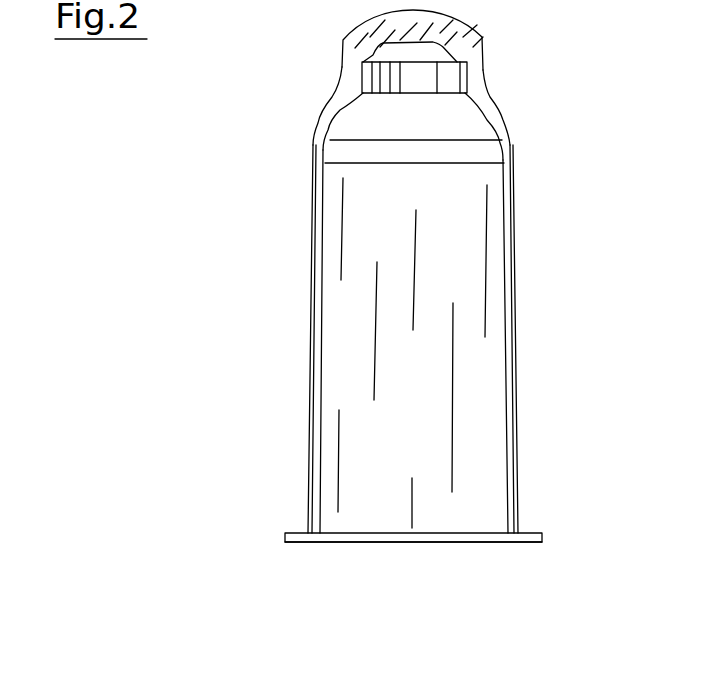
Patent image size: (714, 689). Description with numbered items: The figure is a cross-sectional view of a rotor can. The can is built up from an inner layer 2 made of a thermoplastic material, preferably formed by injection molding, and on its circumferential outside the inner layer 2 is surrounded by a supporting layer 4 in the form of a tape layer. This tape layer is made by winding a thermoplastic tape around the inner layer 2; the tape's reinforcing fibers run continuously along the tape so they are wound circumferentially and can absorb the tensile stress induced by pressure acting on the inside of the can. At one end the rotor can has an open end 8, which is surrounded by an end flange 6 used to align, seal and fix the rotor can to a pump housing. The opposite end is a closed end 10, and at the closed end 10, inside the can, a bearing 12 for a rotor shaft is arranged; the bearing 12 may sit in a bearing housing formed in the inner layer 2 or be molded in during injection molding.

The closed end 10 is at (480, 32).
The inner layer 2 is at (470, 98).
The bearing 12 is at (482, 119).
The supporting layer 4 is at (513, 160).
The end flange 6 is at (543, 531).
The open end 8 is at (423, 543).